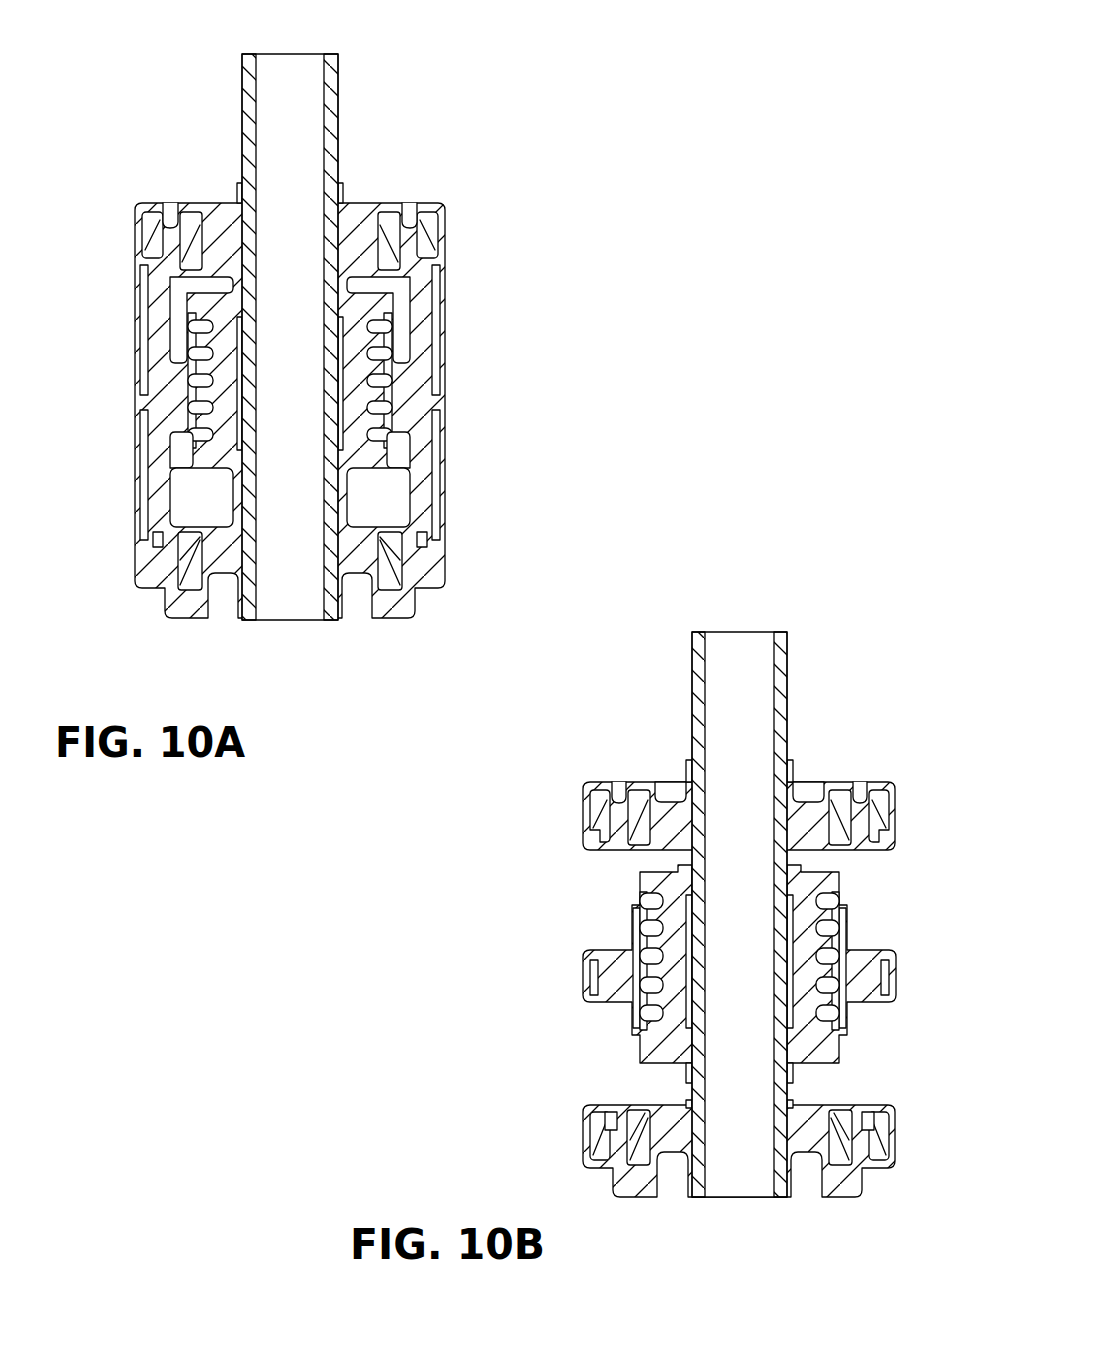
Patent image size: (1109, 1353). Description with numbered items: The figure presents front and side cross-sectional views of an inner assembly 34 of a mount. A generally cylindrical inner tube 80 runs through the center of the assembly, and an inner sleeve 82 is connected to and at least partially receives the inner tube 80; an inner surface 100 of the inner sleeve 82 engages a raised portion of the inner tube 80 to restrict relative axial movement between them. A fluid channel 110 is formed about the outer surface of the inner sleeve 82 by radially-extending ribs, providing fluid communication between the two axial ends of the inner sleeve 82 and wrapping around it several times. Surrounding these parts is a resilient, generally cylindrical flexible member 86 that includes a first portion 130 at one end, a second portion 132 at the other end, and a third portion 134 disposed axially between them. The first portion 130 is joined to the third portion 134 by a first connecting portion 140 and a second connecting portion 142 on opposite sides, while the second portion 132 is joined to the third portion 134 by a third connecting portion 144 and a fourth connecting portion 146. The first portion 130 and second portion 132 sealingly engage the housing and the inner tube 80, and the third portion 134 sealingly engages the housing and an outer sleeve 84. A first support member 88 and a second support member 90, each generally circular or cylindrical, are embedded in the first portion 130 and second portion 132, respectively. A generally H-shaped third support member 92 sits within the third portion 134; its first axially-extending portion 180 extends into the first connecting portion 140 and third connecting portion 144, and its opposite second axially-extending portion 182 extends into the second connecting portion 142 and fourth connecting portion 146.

In FIG. 10A, the inner assembly 34 is at (206, 100).
In FIG. 10B, the inner assembly 34 is at (880, 640).
In FIG. 10A, the inner tube 80 is at (338, 90).
In FIG. 10B, the inner tube 80 is at (788, 676).
In FIG. 10A, the inner sleeve 82 is at (192, 468).
In FIG. 10B, the inner sleeve 82 is at (641, 1058).
In FIG. 10A, the outer sleeve 84 is at (400, 401).
In FIG. 10B, the outer sleeve 84 is at (640, 1020).
In FIG. 10A, the flexible member 86 is at (188, 202).
In FIG. 10A, the first support member 88 is at (150, 225).
In FIG. 10B, the first support member 88 is at (594, 800).
In FIG. 10A, the second support member 90 is at (150, 576).
In FIG. 10B, the second support member 90 is at (594, 1155).
In FIG. 10A, the third support member 92 is at (447, 396).
In FIG. 10B, the third support member 92 is at (592, 980).
In FIG. 10A, the inner surface 100 is at (380, 435).
In FIG. 10A, the fluid channel 110 is at (372, 318).
In FIG. 10B, the fluid channel 110 is at (654, 902).
In FIG. 10A, the first portion 130 is at (457, 221).
In FIG. 10B, the first portion 130 is at (817, 784).
In FIG. 10A, the second portion 132 is at (424, 604).
In FIG. 10B, the second portion 132 is at (558, 1134).
In FIG. 10A, the third portion 134 is at (124, 384).
In FIG. 10B, the third portion 134 is at (554, 934).
In FIG. 10A, the first connecting portion 140 is at (138, 312).
In FIG. 10A, the second connecting portion 142 is at (440, 290).
In FIG. 10A, the third connecting portion 144 is at (135, 471).
In FIG. 10A, the fourth connecting portion 146 is at (445, 445).
In FIG. 10A, the first axially-extending portion 180 is at (145, 272).
In FIG. 10A, the second axially-extending portion 182 is at (432, 333).